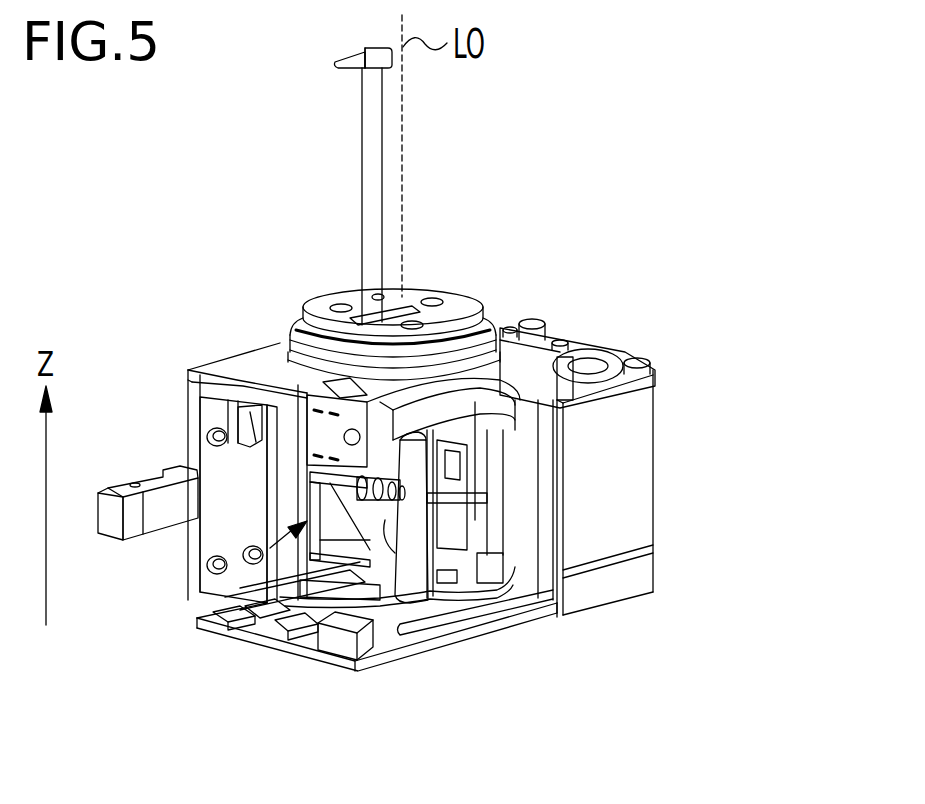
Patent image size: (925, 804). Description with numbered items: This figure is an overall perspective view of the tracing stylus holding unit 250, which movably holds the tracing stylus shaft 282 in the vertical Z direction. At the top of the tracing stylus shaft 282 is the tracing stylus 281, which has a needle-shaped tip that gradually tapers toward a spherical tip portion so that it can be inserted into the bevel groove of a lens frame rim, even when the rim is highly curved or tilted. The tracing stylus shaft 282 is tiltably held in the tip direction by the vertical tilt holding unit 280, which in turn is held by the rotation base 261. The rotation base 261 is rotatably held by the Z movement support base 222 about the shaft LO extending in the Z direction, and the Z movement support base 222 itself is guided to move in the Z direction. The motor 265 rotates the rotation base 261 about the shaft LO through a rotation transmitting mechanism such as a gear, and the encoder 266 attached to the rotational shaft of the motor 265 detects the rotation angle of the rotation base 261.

The Z movement support base 222 is at (242, 365).
The tracing stylus holding unit 250 is at (597, 311).
The rotation base 261 is at (455, 312).
The motor 265 is at (635, 498).
The encoder 266 is at (645, 585).
The vertical tilt holding unit 280 is at (252, 618).
The tracing stylus 281 is at (350, 56).
The tracing stylus shaft 282 is at (365, 172).